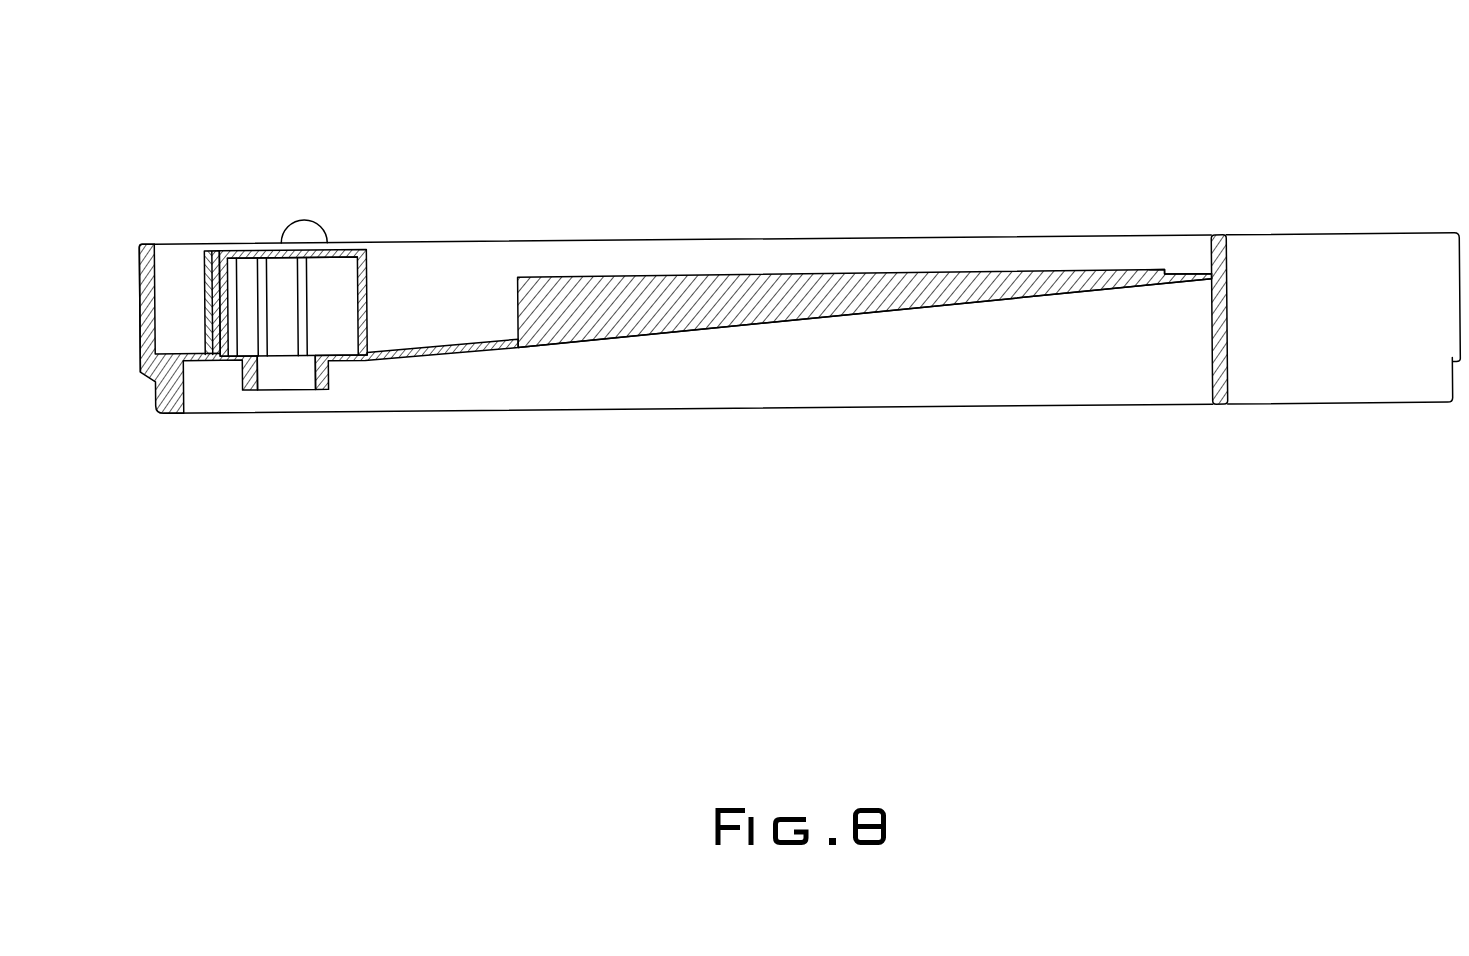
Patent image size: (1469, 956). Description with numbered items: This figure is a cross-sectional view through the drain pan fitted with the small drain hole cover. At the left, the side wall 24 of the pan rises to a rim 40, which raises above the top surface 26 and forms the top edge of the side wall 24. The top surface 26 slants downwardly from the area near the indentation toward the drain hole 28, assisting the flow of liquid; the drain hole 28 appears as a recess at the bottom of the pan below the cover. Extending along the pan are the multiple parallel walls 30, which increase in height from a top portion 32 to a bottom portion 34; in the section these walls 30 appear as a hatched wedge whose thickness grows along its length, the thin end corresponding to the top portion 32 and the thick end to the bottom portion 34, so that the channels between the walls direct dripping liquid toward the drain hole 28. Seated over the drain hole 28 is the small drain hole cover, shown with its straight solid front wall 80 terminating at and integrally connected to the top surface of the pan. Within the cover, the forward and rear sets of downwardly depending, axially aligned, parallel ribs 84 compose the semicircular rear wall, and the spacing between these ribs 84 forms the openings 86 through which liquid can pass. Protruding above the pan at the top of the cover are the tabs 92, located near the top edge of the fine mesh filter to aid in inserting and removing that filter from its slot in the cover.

The side wall 24 is at (140, 284).
The rim 40 is at (142, 237).
The top surface 26 is at (476, 341).
The bottom portion 34 is at (547, 300).
The parallel walls 30 is at (787, 301).
The top portion 32 is at (1153, 277).
The drain hole 28 is at (258, 375).
The front wall 80 is at (367, 306).
The ribs 84 is at (257, 284).
The openings 86 is at (330, 328).
The tabs 92 is at (302, 218).